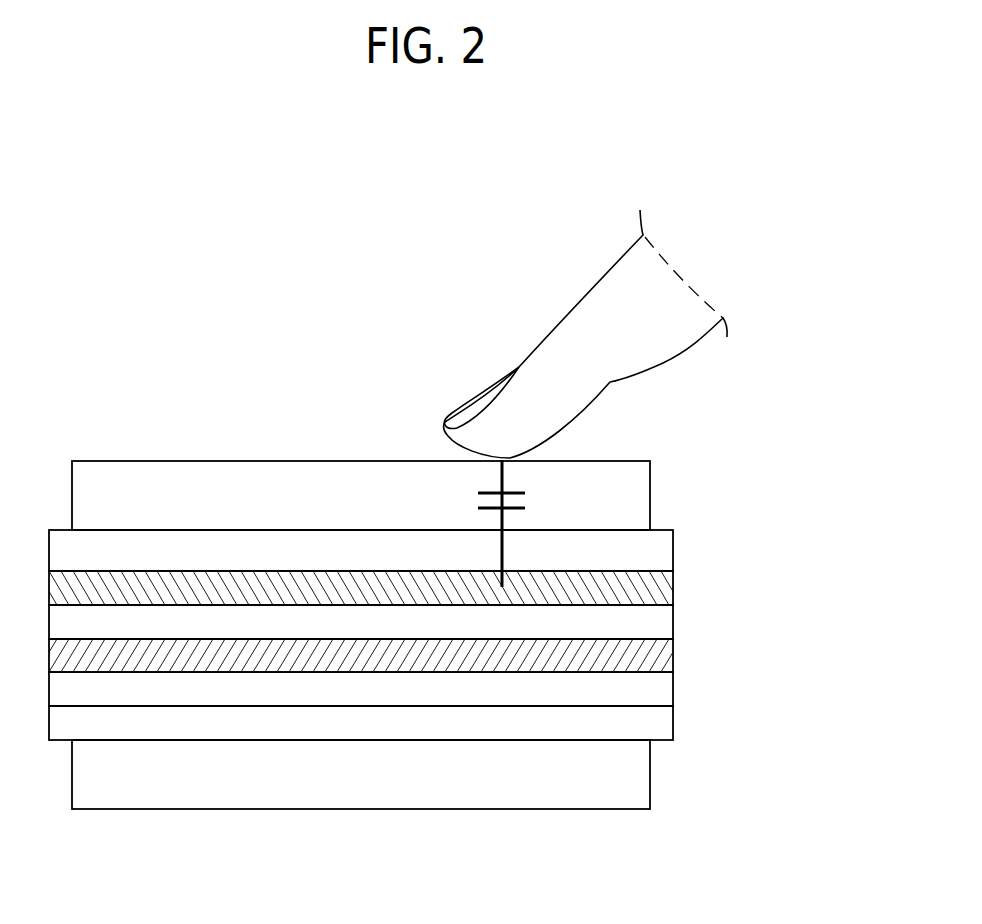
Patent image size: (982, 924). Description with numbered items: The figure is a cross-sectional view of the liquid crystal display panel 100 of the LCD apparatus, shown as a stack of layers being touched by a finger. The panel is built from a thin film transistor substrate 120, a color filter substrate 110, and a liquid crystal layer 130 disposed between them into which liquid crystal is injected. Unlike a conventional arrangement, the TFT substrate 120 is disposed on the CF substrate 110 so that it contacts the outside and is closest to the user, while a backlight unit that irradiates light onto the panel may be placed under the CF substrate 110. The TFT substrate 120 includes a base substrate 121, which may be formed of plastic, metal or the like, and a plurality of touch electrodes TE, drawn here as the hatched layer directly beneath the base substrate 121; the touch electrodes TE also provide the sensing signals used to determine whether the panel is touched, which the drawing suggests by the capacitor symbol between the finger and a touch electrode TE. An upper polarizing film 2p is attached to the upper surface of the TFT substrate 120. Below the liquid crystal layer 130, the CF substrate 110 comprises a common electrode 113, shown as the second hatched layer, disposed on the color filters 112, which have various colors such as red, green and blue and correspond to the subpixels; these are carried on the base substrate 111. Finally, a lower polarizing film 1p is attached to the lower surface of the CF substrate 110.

The liquid crystal display panel 100 is at (172, 293).
The thin film transistor substrate 120 is at (435, 533).
The upper polarizing film 2p is at (628, 500).
The base substrate 121 is at (673, 548).
The touch electrode TE is at (404, 588).
The liquid crystal layer 130 is at (673, 620).
The color filter substrate 110 is at (437, 724).
The common electrode 113 is at (673, 653).
The color filter 112 is at (673, 687).
The base substrate 111 is at (673, 718).
The lower polarizing film 1p is at (414, 774).